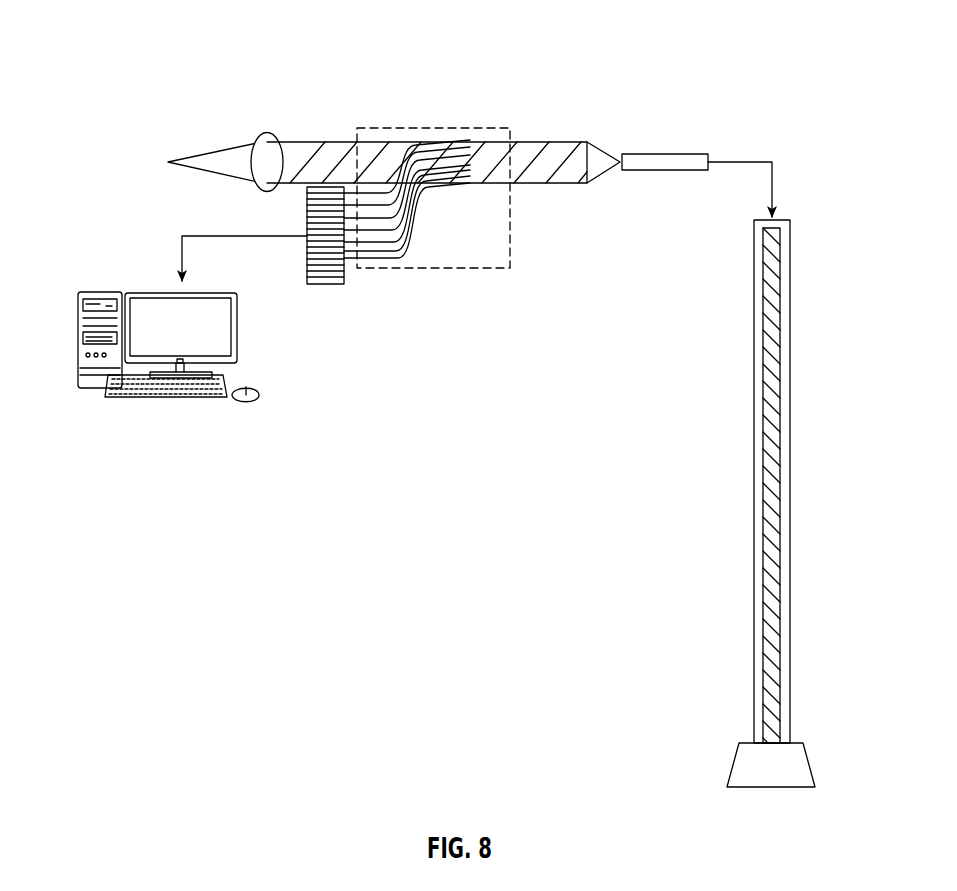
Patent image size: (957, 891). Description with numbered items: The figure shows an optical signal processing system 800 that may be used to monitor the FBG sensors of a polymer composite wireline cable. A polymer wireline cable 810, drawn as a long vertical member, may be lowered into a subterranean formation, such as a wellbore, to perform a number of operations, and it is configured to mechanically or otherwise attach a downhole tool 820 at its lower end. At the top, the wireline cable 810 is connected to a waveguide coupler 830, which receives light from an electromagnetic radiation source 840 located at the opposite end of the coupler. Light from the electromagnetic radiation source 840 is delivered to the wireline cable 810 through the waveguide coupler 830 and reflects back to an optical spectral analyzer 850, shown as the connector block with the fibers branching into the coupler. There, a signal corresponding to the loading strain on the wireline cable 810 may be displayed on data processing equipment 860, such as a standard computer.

The optical signal processing system 800 is at (535, 46).
The polymer wireline cable 810 is at (726, 387).
The downhole tool 820 is at (725, 756).
The waveguide coupler 830 is at (577, 126).
The electromagnetic radiation source 840 is at (185, 136).
The optical spectral analyzer 850 is at (345, 291).
The data processing equipment 860 is at (260, 409).